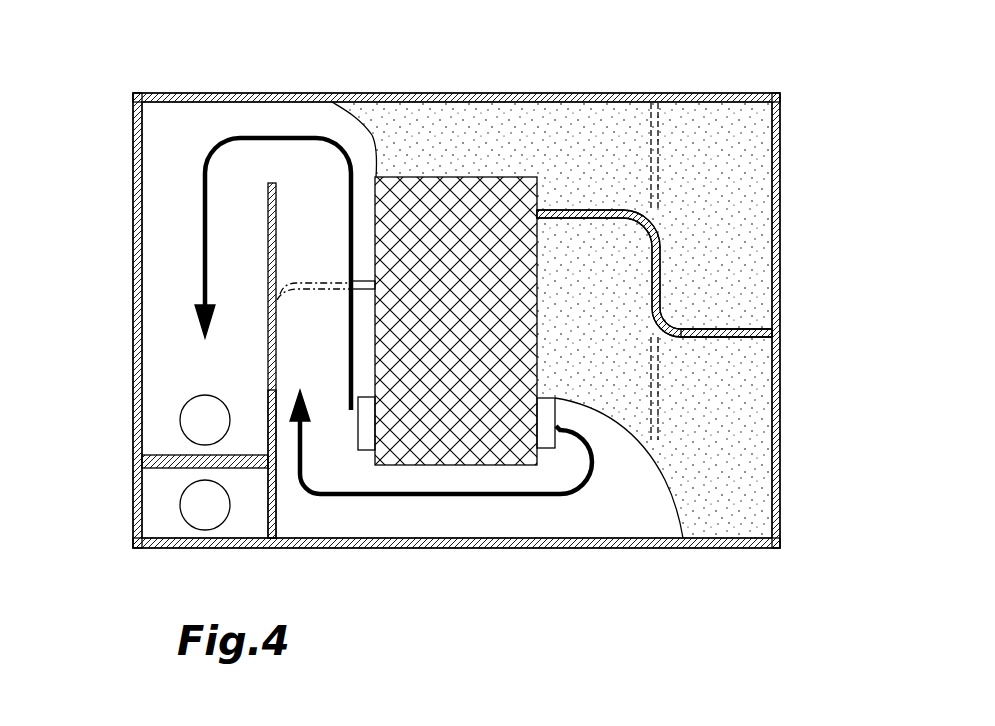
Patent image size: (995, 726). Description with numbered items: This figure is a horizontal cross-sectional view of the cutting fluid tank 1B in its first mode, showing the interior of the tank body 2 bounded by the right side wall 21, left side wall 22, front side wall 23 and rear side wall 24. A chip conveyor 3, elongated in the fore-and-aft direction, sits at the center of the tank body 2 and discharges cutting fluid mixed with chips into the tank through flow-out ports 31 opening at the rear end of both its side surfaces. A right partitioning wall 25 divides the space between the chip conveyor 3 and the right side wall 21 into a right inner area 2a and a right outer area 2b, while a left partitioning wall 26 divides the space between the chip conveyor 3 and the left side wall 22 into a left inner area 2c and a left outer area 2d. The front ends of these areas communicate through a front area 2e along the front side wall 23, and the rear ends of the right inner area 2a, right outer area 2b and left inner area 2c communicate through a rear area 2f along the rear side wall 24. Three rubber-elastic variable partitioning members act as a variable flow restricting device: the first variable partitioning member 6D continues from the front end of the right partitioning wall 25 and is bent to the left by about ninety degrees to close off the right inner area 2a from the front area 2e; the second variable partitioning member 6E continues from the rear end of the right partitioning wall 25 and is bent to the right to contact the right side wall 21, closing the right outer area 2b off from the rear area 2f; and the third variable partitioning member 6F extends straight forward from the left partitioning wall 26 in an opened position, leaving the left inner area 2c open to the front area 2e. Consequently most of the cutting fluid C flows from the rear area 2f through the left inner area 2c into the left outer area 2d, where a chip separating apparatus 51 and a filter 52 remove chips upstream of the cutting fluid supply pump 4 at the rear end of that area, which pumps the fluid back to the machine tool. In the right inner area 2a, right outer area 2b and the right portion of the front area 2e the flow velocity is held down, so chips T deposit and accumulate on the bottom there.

The cutting fluid tank 1B is at (552, 90).
The tank body 2 is at (448, 317).
The right side wall 21 is at (780, 233).
The left side wall 22 is at (133, 232).
The front side wall 23 is at (438, 94).
The rear side wall 24 is at (615, 548).
The right partitioning wall 25 is at (663, 254).
The left partitioning wall 26 is at (268, 390).
The right inner area 2a is at (571, 300).
The right outer area 2b is at (694, 309).
The left inner area 2c is at (328, 346).
The left outer area 2d is at (190, 278).
The front area 2e is at (436, 154).
The rear area 2f is at (471, 533).
The chip conveyor 3 is at (400, 456).
The flow-out ports 31 is at (342, 448).
The cutting fluid supply pump 4 is at (202, 517).
The chip separating apparatus 51 is at (195, 418).
The filter 52 is at (172, 455).
The first variable partitioning member 6D is at (687, 271).
The second variable partitioning member 6E is at (745, 338).
The third variable partitioning member 6F is at (274, 360).
The cutting fluid C is at (200, 185).
The chips T is at (727, 430).